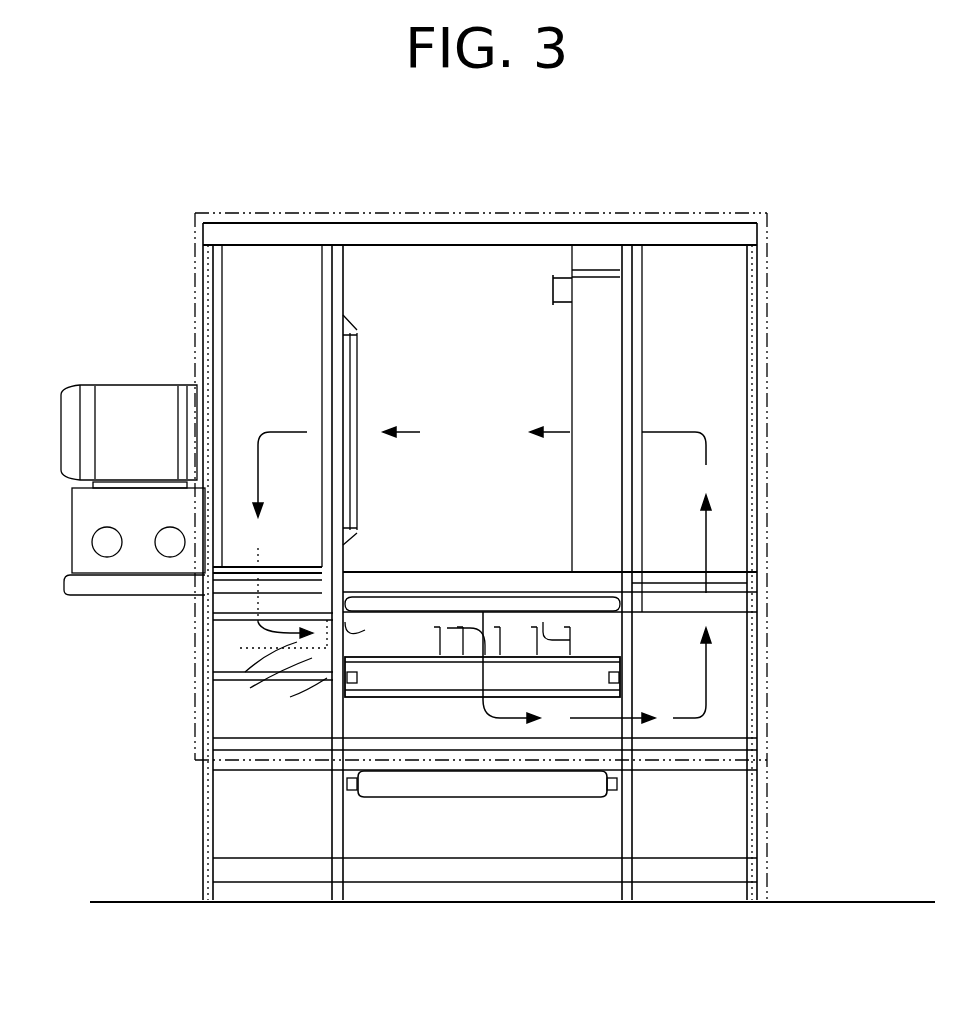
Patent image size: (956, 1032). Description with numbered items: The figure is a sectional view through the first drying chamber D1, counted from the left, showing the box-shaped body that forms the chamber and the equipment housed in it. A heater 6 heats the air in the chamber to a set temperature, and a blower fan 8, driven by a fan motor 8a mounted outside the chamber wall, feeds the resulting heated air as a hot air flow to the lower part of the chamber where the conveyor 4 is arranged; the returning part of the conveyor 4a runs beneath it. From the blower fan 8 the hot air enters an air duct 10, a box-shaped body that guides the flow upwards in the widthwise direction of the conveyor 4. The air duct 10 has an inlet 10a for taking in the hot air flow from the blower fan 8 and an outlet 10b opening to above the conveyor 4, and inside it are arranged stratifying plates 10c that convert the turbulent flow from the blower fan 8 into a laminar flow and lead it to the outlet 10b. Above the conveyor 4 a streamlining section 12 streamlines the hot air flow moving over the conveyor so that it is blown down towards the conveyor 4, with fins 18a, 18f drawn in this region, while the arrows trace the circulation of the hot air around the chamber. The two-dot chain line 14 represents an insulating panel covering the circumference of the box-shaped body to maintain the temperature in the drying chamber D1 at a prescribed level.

The conveyor 4 is at (436, 692).
The returning part of the conveyor 4a is at (490, 795).
The heater 6 is at (607, 312).
The blower fan 8 is at (240, 312).
The fan motor 8a is at (131, 385).
The air duct 10 is at (242, 640).
The inlet 10a is at (232, 612).
The outlet 10b is at (365, 615).
The stratifying plates 10c is at (290, 697).
The streamlining section 12 is at (438, 640).
The insulating panel 14 is at (768, 312).
The fin 18a is at (393, 648).
The fin 18f is at (543, 622).
The drying chamber D1 is at (452, 268).